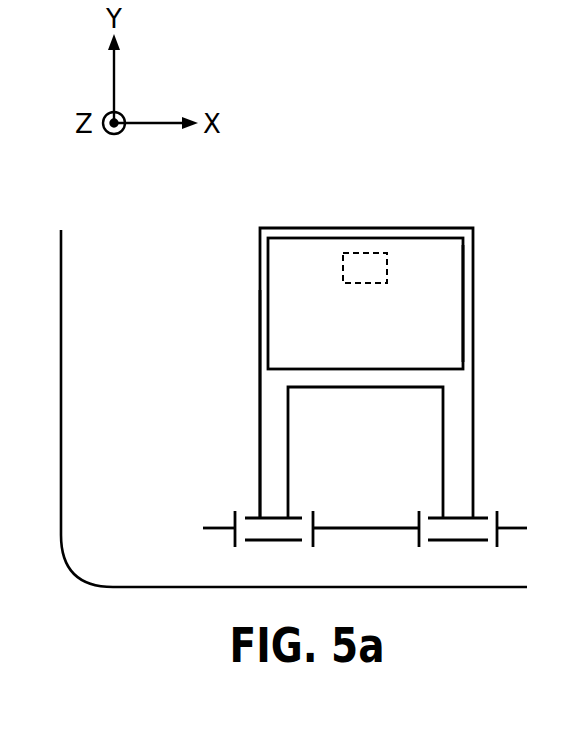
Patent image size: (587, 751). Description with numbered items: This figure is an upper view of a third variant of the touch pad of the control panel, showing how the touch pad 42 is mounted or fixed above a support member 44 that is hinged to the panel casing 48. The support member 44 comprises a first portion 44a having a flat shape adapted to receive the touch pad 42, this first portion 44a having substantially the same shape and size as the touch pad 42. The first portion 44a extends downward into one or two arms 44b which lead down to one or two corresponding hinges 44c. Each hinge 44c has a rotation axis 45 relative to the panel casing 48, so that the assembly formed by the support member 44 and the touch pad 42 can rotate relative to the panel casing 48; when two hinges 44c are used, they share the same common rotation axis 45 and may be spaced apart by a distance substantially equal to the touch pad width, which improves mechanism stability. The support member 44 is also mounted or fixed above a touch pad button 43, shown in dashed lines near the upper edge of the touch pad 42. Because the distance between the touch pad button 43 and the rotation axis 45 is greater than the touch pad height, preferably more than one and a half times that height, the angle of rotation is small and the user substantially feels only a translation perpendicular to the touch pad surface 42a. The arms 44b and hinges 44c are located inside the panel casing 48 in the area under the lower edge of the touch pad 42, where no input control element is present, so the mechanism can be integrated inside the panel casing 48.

The touch pad 42 is at (310, 268).
The touch pad surface 42a is at (440, 317).
The touch pad button 43 is at (365, 268).
The support member 44 is at (260, 270).
The first portion 44a is at (248, 336).
The arms 44b is at (278, 452).
The hinges 44c is at (455, 528).
The rotation axis 45 is at (214, 524).
The panel casing 48 is at (61, 320).